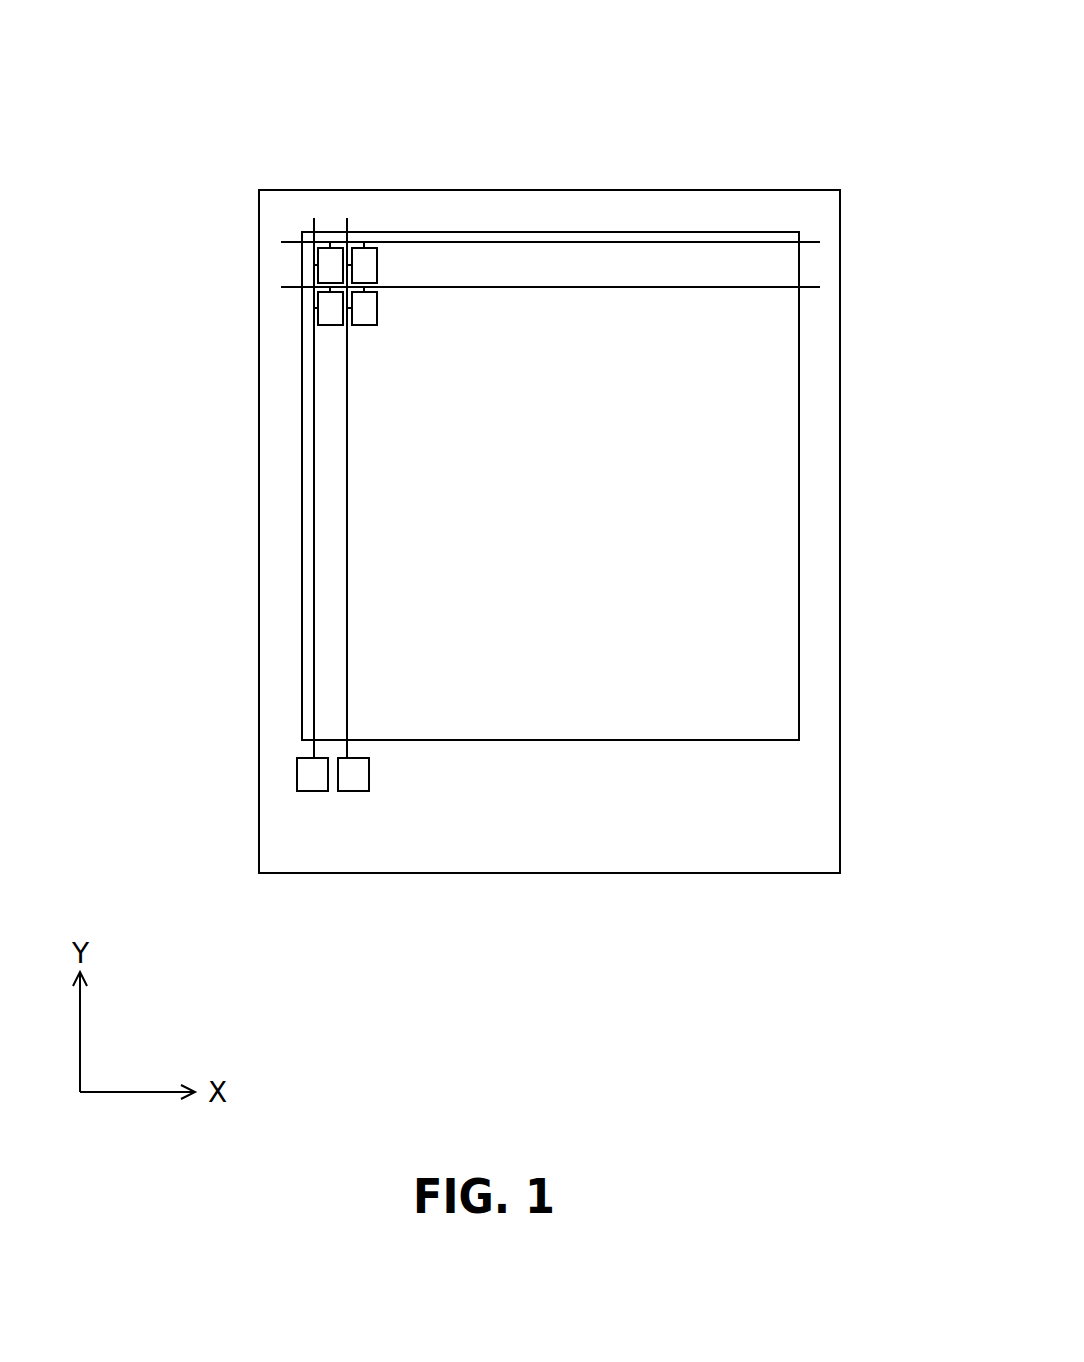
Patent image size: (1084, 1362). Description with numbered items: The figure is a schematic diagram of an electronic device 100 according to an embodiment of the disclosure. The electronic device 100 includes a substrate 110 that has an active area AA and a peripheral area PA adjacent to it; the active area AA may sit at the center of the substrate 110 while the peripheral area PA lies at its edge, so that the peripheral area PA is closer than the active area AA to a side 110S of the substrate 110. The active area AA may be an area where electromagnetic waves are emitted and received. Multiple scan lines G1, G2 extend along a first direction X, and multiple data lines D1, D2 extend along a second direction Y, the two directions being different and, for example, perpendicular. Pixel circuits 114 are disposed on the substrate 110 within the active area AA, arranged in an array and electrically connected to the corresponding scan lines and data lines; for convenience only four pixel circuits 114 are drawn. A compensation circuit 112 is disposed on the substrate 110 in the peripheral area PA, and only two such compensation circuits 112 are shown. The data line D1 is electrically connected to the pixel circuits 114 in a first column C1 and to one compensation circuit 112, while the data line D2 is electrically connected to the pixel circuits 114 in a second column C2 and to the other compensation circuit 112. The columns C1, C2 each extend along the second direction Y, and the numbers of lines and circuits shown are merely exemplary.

The electronic device 100 is at (898, 1018).
The substrate 110 is at (741, 210).
The side of the substrate 110S is at (840, 370).
The peripheral area PA is at (822, 465).
The active area AA is at (788, 533).
The scan line G1 is at (290, 242).
The scan line G2 is at (289, 287).
The data line D1 is at (315, 221).
The data line D2 is at (348, 221).
The first column C1 is at (301, 113).
The second column C2 is at (379, 98).
The pixel circuits 114 is at (211, 290).
The compensation circuit 112 is at (255, 842).